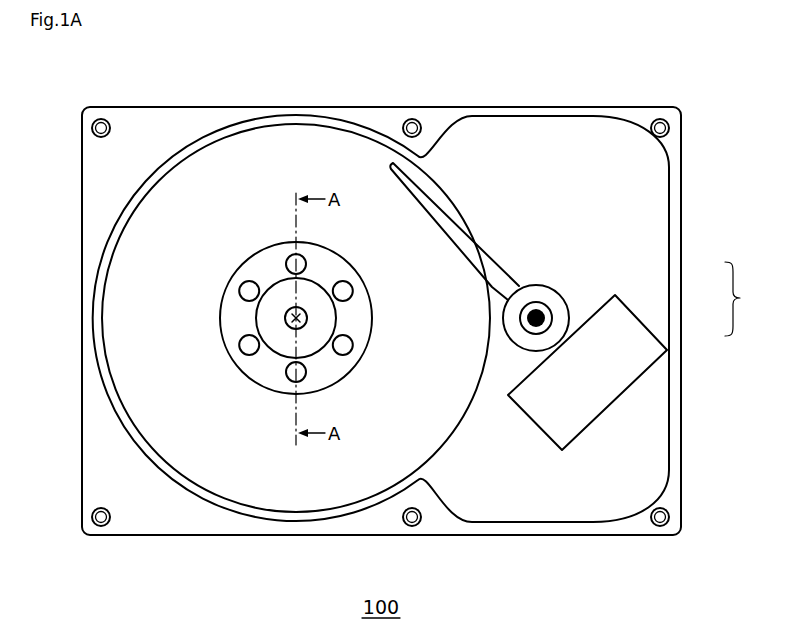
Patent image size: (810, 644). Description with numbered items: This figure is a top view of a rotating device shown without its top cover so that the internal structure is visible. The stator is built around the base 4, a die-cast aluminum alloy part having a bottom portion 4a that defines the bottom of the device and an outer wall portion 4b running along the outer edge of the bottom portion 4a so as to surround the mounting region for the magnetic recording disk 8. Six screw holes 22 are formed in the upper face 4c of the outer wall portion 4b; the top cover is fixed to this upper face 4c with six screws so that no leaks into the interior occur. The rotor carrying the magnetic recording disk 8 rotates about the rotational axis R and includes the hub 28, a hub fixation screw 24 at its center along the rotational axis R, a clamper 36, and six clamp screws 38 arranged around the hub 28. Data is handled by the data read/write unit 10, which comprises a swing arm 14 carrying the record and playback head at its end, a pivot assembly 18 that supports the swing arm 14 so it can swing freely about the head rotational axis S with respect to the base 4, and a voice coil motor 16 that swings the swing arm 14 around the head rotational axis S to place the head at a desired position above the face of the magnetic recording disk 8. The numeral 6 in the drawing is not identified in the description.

The base 4 is at (682, 228).
The bottom portion 4a is at (495, 145).
The outer wall portion 4b is at (167, 128).
The upper face 4c is at (91, 168).
The screw holes 22 is at (101, 119).
The magnetic disk 6 is at (273, 380).
The magnetic recording disk 8 is at (295, 160).
The clamper 36 is at (233, 327).
The hub 28 is at (268, 308).
The hub fixation screw 24 is at (302, 310).
The clamp screws 38 is at (246, 290).
The rotational axis R is at (288, 322).
The swing arm 14 is at (503, 265).
The pivot assembly 18 is at (557, 305).
The voice coil motor 16 is at (635, 343).
The data read/write unit 10 is at (742, 299).
The head rotational axis S is at (540, 323).